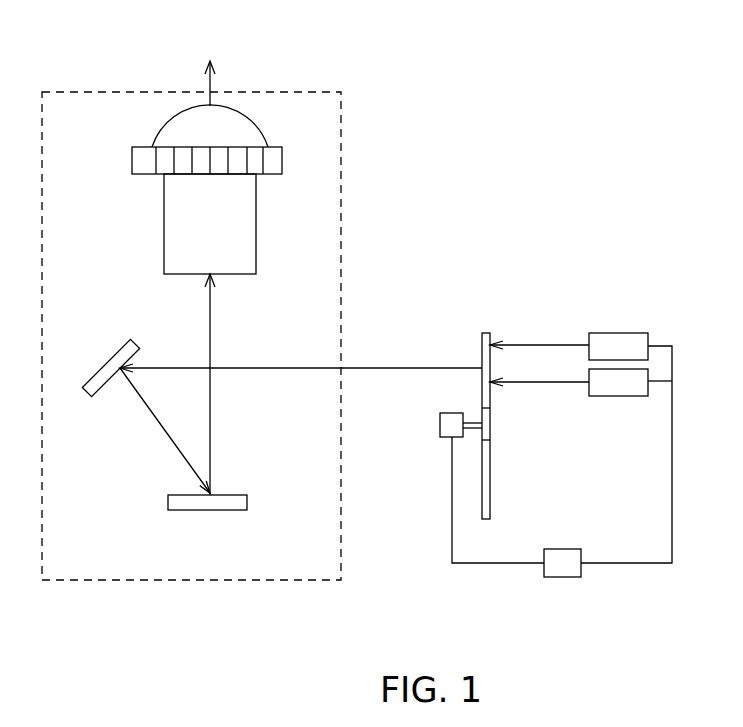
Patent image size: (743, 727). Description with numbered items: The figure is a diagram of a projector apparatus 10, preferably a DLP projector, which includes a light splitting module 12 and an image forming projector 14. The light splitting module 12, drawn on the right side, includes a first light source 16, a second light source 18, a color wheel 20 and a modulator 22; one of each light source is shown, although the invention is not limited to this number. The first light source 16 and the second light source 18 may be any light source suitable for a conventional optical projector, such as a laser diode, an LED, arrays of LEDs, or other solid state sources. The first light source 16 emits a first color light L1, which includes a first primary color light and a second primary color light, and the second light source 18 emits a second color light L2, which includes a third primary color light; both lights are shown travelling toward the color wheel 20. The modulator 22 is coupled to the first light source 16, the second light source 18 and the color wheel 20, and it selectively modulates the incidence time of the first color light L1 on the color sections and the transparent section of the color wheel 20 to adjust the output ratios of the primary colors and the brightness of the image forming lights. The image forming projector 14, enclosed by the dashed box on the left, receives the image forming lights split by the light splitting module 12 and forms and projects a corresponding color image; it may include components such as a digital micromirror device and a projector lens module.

The projector apparatus 10 is at (670, 112).
The light splitting module 12 is at (648, 582).
The image forming projector 14 is at (342, 229).
The first light source 16 is at (613, 342).
The second light source 18 is at (613, 388).
The color wheel 20 is at (485, 330).
The modulator 22 is at (563, 570).
The first color light L1 is at (545, 343).
The second color light L2 is at (548, 383).